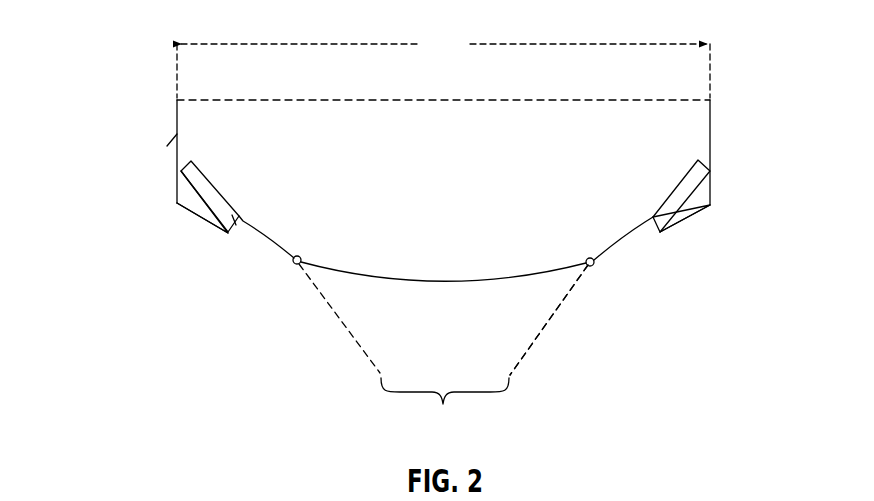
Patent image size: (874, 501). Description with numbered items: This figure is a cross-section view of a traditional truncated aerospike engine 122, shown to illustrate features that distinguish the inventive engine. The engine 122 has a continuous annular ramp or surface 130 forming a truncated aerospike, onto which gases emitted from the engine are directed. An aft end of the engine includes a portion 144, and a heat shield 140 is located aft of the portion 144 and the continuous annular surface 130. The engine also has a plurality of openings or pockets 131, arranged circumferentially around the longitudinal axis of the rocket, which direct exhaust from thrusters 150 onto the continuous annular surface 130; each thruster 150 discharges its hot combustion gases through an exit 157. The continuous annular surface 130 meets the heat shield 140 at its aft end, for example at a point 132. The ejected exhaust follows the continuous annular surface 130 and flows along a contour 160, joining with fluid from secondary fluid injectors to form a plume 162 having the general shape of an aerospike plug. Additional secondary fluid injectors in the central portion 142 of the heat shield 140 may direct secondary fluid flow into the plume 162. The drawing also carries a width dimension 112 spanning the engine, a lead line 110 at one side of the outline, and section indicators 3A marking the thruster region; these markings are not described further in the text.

The head-mounted frame 110 is at (712, 122).
The frame width 112 is at (443, 63).
The traditional truncated aerospike engine 122 is at (155, 30).
The continuous annular surface 130 is at (260, 240).
The openings or pockets 131 is at (247, 298).
The point 132 is at (586, 268).
The heat shield 140 is at (380, 326).
The central portion 142 is at (345, 275).
The portion 144 is at (197, 218).
The thruster 150 is at (176, 180).
The exit 157 is at (660, 233).
The contour 160 is at (513, 359).
The plume 162 is at (445, 411).
The section view 3A is at (172, 143).